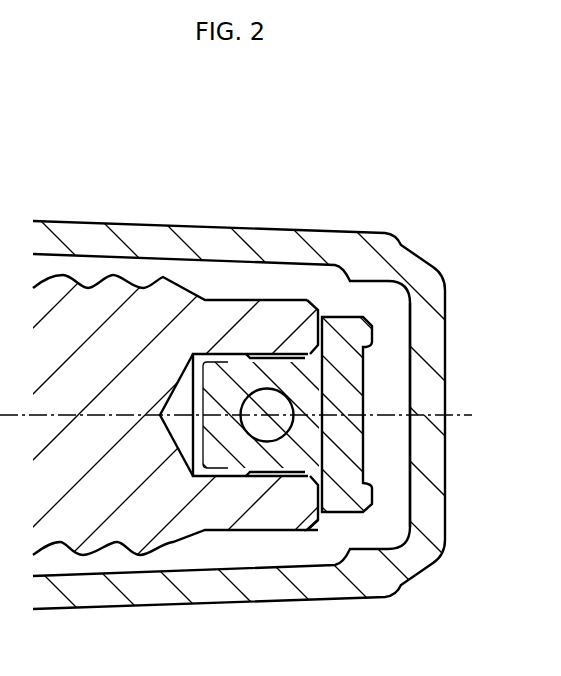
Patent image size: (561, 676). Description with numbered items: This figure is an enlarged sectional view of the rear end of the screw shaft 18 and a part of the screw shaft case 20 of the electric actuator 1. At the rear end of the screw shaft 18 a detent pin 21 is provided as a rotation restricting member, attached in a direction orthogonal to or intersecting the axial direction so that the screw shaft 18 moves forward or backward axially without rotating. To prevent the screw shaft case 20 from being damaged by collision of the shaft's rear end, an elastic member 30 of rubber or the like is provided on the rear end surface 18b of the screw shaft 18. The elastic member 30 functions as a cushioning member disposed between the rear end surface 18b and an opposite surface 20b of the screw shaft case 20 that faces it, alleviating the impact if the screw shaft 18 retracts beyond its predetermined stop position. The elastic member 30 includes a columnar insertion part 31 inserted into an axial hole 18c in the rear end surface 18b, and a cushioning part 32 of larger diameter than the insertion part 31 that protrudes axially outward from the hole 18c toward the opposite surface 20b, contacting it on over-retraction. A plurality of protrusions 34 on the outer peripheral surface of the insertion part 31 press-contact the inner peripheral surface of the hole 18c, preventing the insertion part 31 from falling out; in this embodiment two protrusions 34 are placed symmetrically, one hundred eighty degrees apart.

The electric actuator 1 is at (328, 180).
The screw shaft 18 is at (82, 517).
The rear end surface 18b is at (345, 542).
The axial hole 18c is at (193, 463).
The screw shaft case 20 is at (144, 237).
The opposite surface 20b is at (405, 425).
The detent pin 21 is at (278, 425).
The elastic member 30 is at (376, 373).
The insertion part 31 is at (273, 373).
The cushioning part 32 is at (350, 330).
The protrusions 34 is at (240, 352).